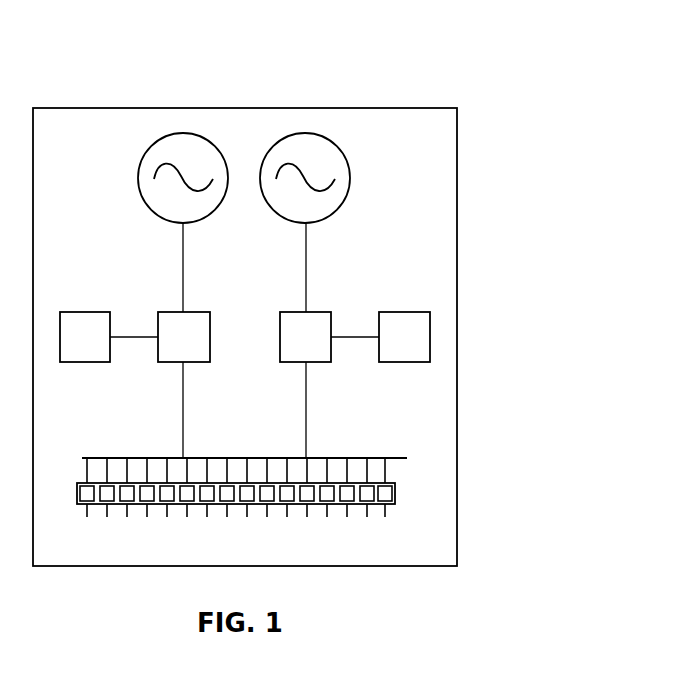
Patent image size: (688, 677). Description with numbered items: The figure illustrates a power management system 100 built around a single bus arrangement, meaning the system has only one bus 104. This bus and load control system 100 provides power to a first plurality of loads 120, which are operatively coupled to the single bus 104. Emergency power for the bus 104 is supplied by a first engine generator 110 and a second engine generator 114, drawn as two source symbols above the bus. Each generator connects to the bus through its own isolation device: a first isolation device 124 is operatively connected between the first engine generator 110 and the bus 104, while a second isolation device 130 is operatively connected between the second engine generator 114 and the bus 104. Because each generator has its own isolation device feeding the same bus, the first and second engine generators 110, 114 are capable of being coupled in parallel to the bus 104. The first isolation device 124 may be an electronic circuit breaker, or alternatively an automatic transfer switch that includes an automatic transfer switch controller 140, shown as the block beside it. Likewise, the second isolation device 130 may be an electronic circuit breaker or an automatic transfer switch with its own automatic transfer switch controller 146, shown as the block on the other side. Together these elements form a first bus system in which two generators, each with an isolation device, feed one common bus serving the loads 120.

The power management system 100 is at (458, 73).
The bus 104 is at (372, 458).
The first engine generator 110 is at (203, 131).
The second engine generator 114 is at (322, 131).
The first plurality of loads 120 is at (348, 585).
The first isolation device 124 is at (172, 312).
The second isolation device 130 is at (318, 312).
The automatic transfer switch controller 140 is at (85, 312).
The automatic transfer switch controller 146 is at (405, 312).